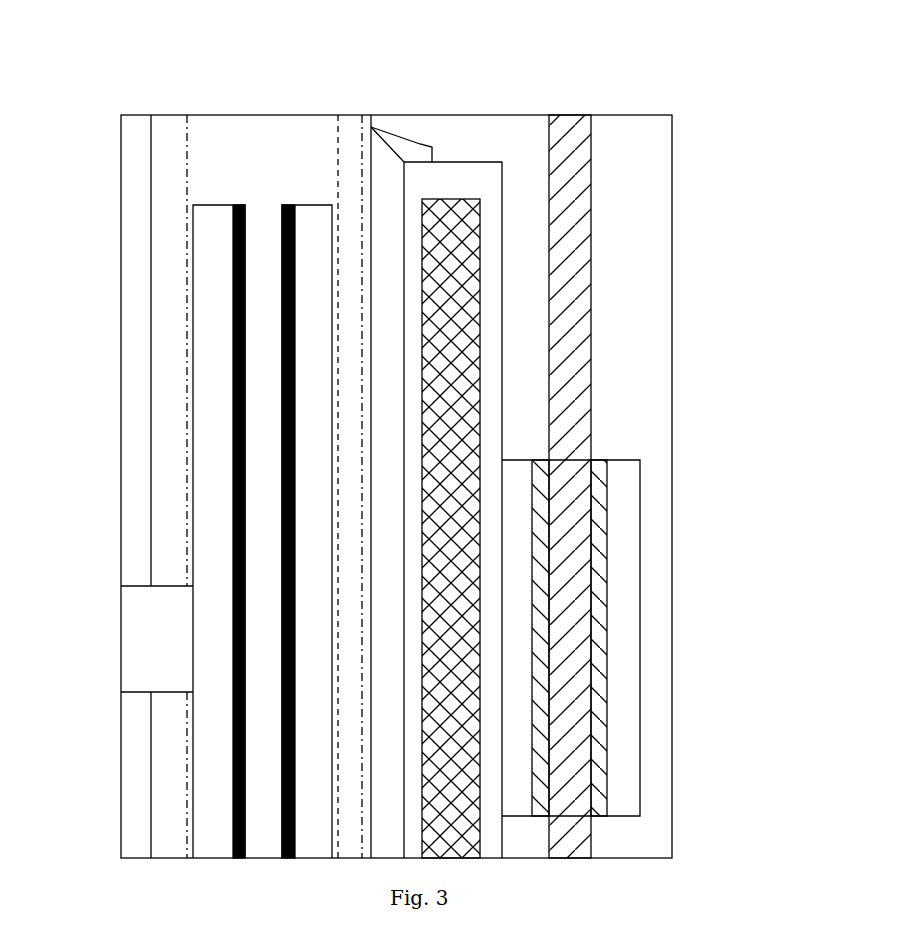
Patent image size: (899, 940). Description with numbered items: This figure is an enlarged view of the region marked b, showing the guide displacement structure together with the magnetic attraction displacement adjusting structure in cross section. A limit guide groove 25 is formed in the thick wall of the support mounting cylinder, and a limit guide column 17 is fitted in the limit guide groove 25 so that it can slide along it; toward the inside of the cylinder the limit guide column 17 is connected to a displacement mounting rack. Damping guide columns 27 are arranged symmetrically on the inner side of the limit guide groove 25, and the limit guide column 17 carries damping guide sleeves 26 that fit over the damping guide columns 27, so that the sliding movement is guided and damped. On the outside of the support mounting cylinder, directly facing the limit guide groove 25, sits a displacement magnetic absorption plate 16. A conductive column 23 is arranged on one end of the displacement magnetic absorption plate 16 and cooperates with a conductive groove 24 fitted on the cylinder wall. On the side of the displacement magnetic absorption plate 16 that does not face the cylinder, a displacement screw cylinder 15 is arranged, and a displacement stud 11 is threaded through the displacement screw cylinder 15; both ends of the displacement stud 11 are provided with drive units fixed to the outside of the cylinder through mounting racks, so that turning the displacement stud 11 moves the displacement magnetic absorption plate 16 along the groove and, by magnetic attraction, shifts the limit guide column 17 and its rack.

The displacement stud 11 is at (593, 320).
The displacement screw cylinder 15 is at (640, 502).
The displacement magnetic absorption plate 16 is at (503, 285).
The limit guide column 17 is at (307, 205).
The conductive column 23 is at (425, 137).
The conductive groove 24 is at (363, 150).
The limit guide groove 25 is at (187, 193).
The damping guide sleeve 26 is at (233, 252).
The damping guide column 27 is at (265, 298).
The region b is at (625, 115).